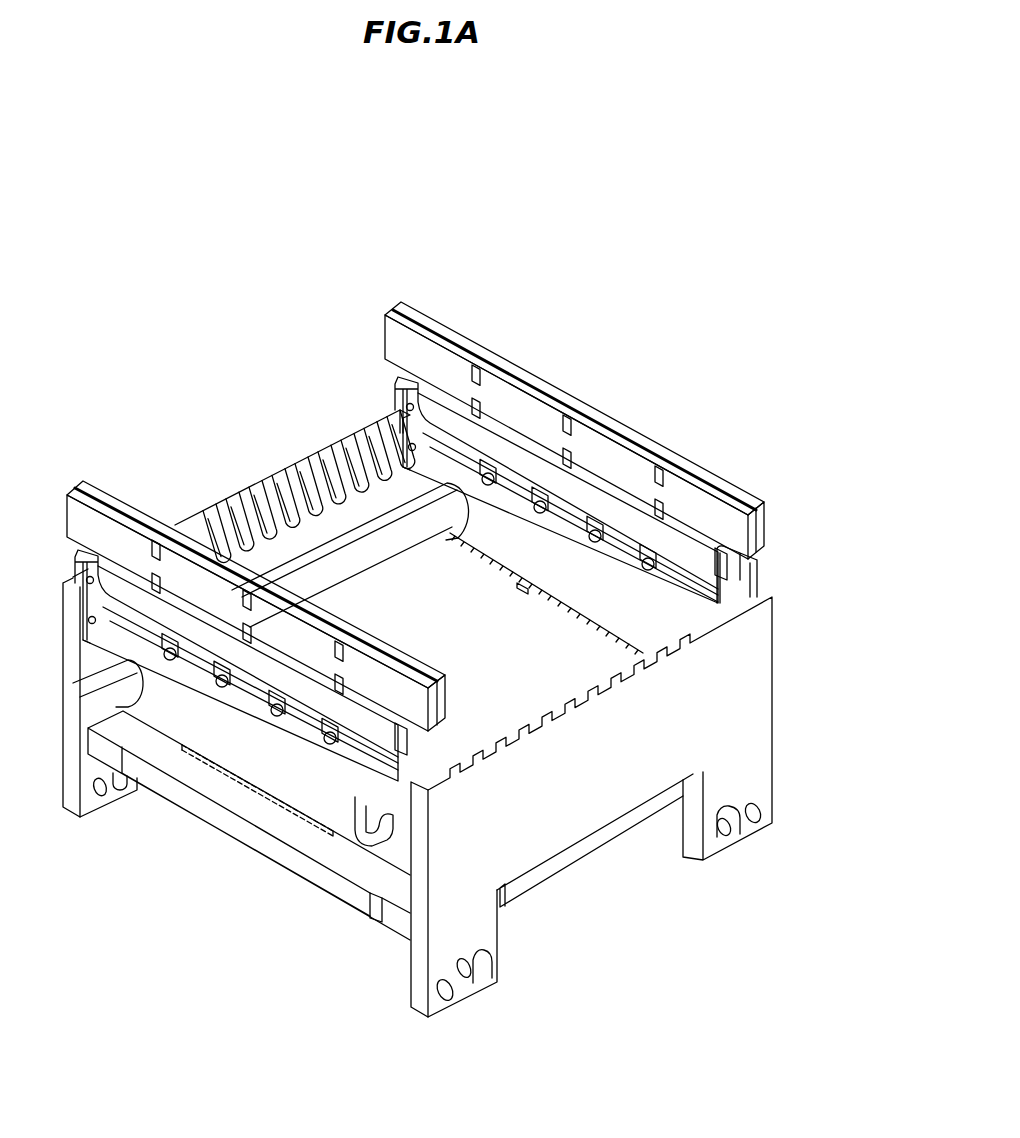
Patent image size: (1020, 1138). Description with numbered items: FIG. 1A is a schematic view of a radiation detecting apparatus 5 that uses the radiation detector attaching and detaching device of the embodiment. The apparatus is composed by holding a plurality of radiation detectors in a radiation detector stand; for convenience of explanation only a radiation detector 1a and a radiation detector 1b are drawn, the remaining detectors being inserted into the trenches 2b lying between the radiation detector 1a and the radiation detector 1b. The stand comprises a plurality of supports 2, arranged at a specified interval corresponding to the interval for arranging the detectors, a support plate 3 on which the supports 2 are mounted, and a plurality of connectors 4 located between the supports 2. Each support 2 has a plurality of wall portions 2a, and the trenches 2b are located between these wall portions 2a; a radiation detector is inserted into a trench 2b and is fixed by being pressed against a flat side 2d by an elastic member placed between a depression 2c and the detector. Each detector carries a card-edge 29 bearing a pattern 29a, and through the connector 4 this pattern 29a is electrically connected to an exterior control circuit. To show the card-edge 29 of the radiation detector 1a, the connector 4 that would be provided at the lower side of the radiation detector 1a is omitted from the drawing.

The radiation detecting apparatus 5 is at (490, 294).
The radiation detector 1a is at (75, 482).
The radiation detector 1b is at (588, 390).
The support 2 is at (63, 810).
The wall portion 2a is at (285, 478).
The trench 2b is at (297, 470).
The depression 2c is at (252, 490).
The flat side 2d is at (222, 507).
The support plate 3 is at (557, 871).
The connector 4 is at (578, 610).
The card-edge 29 is at (240, 786).
The pattern 29a is at (300, 814).